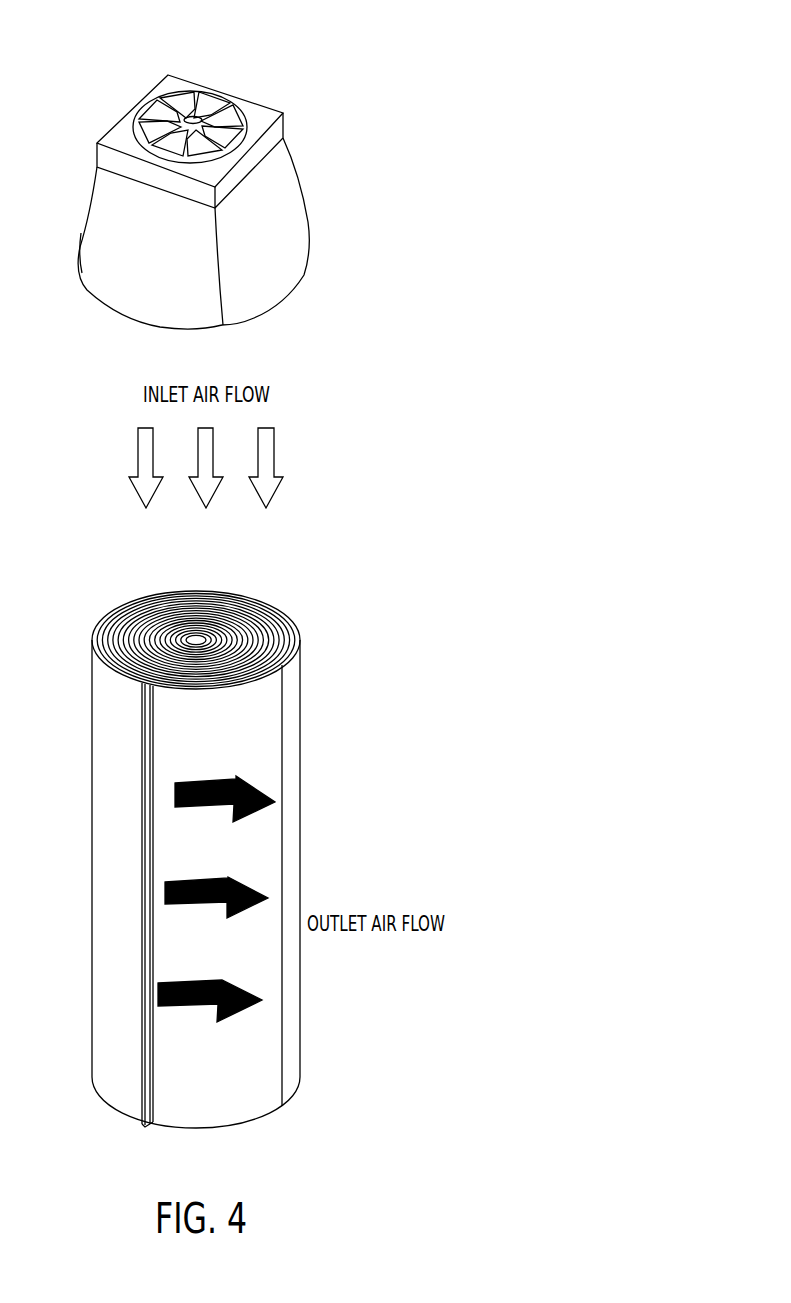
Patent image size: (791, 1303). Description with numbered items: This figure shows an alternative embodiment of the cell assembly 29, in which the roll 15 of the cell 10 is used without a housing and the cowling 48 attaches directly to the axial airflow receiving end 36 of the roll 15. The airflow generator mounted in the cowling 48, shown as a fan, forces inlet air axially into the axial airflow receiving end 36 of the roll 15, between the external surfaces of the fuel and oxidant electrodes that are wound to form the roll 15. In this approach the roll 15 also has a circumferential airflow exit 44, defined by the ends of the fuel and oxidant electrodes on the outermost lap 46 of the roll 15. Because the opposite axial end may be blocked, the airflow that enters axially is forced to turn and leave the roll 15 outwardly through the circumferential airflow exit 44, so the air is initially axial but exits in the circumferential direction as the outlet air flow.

The cell 10 is at (407, 768).
The roll 15 is at (290, 623).
The cell assembly 29 is at (428, 61).
The axial airflow receiving end 36 is at (121, 612).
The circumferential airflow exit 44 is at (150, 938).
The outermost lap 46 is at (127, 847).
The cowling 48 is at (295, 229).